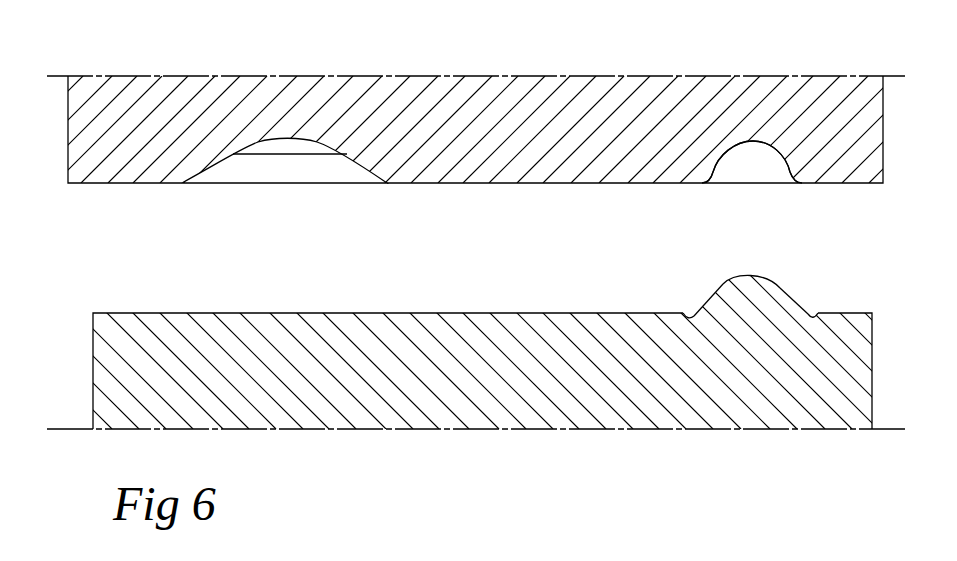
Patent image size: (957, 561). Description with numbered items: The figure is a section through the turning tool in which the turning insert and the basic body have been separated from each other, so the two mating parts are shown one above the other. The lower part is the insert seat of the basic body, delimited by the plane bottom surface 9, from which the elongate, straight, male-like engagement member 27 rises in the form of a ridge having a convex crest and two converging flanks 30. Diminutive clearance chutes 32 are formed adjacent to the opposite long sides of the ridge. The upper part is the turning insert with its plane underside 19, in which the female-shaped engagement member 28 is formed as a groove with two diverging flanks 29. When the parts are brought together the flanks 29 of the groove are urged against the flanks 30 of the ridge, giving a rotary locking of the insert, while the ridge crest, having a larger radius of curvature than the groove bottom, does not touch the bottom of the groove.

The bottom surface 9 is at (532, 312).
The underside 19 is at (457, 185).
The engagement member (ridge) 27 is at (747, 272).
The engagement member (groove) 28 is at (747, 163).
The flanks of the groove 29 is at (716, 173).
The flanks of the ridge 30 is at (720, 292).
The clearance chutes 32 is at (693, 308).